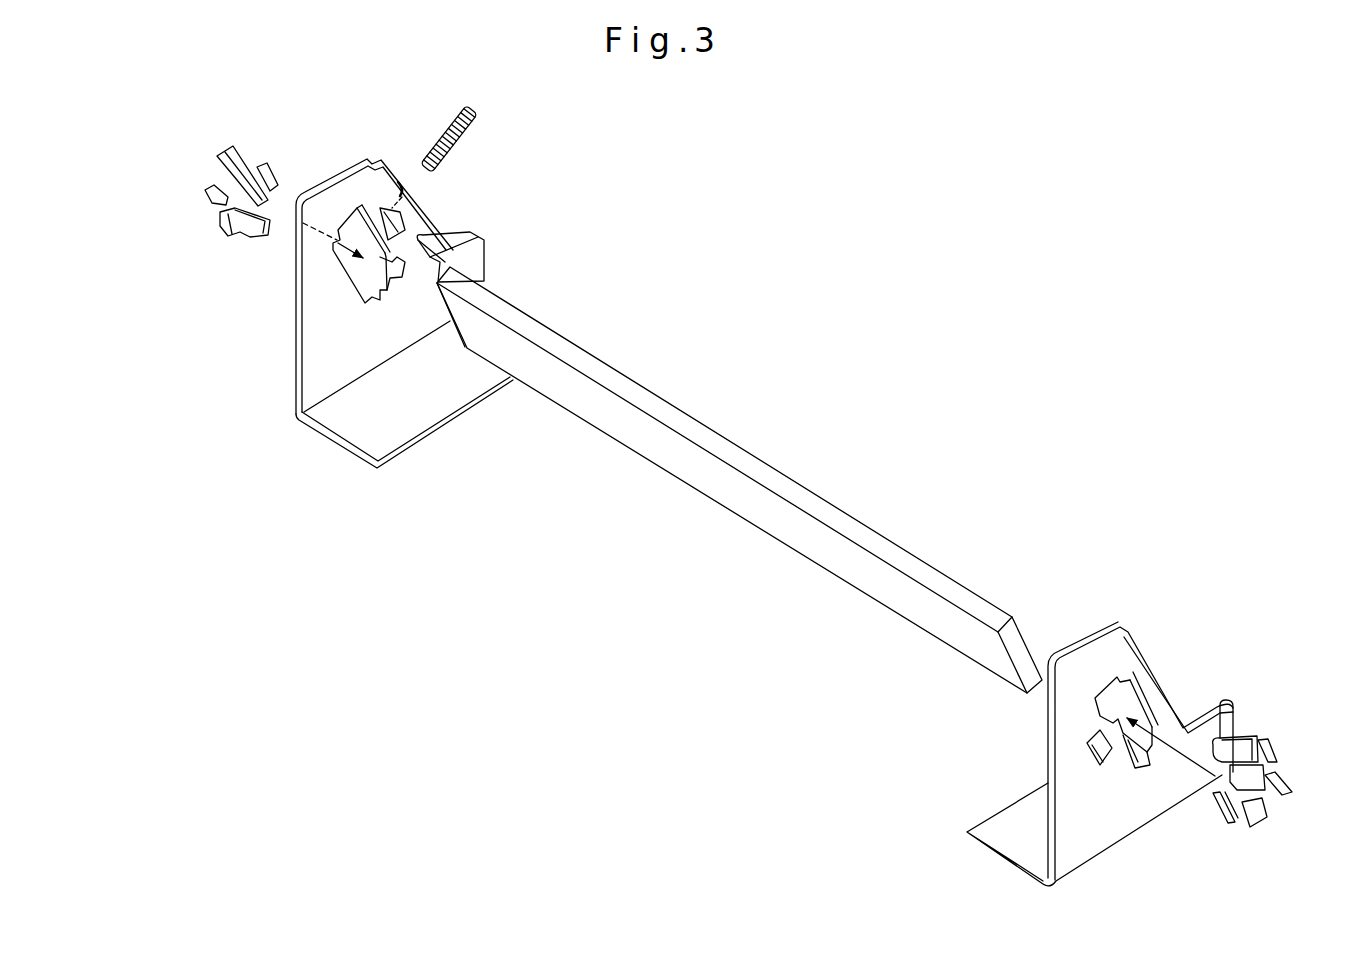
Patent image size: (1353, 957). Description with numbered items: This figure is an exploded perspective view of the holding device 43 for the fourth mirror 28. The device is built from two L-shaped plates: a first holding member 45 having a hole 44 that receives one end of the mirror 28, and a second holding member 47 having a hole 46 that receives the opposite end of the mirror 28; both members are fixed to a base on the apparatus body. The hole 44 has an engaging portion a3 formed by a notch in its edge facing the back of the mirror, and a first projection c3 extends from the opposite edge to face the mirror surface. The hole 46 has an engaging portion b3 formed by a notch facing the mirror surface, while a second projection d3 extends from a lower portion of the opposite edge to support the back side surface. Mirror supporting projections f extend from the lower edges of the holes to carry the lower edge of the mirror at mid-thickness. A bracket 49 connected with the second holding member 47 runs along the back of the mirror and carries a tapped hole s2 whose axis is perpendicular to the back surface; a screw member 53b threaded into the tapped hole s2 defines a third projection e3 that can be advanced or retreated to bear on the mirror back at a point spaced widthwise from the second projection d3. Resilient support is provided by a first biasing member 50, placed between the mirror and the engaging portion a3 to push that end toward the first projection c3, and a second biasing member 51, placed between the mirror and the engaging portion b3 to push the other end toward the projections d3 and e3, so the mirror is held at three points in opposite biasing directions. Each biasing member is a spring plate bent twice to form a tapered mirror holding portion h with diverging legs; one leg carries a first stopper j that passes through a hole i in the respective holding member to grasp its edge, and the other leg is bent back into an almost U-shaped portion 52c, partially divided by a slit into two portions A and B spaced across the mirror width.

The fourth mirror 28 is at (728, 493).
The holding device 43 is at (230, 357).
The hole 44 is at (1103, 706).
The first holding member 45 is at (1143, 648).
The hole 46 is at (348, 235).
The second holding member 47 is at (487, 255).
The bracket 49 is at (450, 222).
The first biasing member 50 is at (1290, 756).
The second biasing member 51 is at (203, 146).
The U-shaped portion 52c is at (277, 233).
The screw member 53b is at (458, 115).
The mirror holding portion h is at (220, 142).
The first stopper j is at (252, 162).
The mirror supporting projections f is at (350, 232).
The hole i is at (408, 217).
The portion A is at (222, 190).
The portion B is at (258, 238).
The tapped hole s2 is at (381, 157).
The third projection e3 is at (398, 182).
The engaging portion b3 is at (340, 268).
The second projection d3 is at (396, 283).
The first projection c3 is at (1108, 712).
The engaging portion a3 is at (1132, 693).